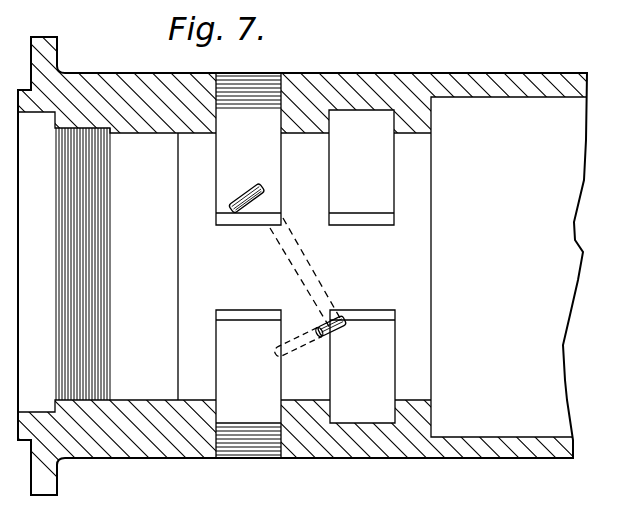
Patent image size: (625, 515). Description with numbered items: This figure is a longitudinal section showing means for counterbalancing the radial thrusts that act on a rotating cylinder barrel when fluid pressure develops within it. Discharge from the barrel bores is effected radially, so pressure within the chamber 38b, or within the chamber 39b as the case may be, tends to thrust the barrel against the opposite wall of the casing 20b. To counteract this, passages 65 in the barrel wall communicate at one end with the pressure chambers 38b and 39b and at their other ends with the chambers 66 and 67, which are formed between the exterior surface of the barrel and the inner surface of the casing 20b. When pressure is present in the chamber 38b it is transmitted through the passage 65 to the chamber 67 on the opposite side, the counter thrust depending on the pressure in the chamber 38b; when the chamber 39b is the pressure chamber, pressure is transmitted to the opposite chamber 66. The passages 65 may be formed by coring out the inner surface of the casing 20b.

The casing 20b is at (318, 83).
The pressure chamber 38b is at (261, 163).
The pressure chamber 39b is at (263, 353).
The passage 65 is at (318, 272).
The chamber 66 is at (362, 199).
The chamber 67 is at (384, 341).